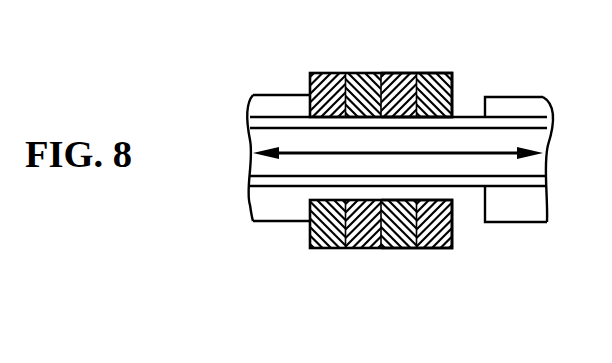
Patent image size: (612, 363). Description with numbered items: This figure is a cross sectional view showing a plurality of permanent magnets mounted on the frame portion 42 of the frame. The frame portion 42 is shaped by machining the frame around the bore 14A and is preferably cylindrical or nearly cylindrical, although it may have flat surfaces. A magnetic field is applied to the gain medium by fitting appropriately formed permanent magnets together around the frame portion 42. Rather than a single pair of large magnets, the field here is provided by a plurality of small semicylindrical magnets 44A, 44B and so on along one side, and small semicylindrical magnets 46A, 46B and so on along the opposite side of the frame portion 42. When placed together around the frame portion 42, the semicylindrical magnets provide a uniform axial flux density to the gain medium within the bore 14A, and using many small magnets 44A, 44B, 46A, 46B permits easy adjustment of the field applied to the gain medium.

The frame portion 42 is at (466, 150).
The bore 14A is at (466, 150).
The small semicylindrical magnet 44A is at (308, 83).
The small semicylindrical magnet 44B is at (345, 73).
The small semicylindrical magnet 46A is at (310, 235).
The small semicylindrical magnet 46B is at (345, 248).